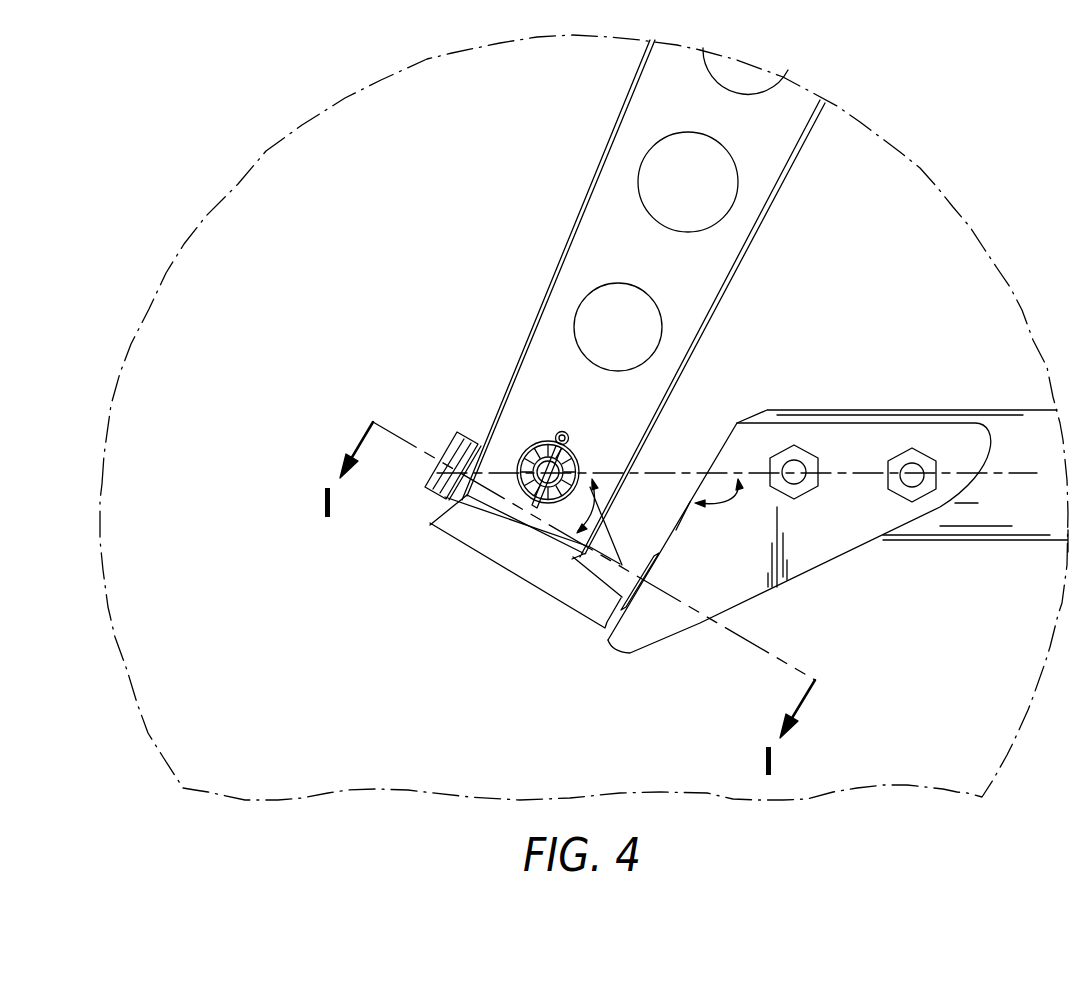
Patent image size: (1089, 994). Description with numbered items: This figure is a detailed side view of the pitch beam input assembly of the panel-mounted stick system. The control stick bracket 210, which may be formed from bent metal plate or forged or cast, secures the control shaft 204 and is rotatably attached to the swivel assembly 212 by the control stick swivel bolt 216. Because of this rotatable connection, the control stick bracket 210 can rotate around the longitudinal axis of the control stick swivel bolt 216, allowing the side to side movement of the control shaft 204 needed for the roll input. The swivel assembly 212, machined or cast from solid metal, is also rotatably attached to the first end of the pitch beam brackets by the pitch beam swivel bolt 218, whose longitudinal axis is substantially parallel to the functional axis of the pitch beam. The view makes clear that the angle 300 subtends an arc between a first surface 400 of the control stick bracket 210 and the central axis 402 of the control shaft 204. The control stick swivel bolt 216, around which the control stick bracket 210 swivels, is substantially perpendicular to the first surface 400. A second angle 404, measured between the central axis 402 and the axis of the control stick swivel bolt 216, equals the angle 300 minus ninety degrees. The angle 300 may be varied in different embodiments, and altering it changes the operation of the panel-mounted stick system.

The control shaft 204 is at (1003, 428).
The control stick bracket 210 is at (817, 553).
The swivel assembly 212 is at (507, 562).
The control stick swivel bolt 216 is at (452, 457).
The pitch beam swivel bolt 218 is at (548, 466).
The angle 300 is at (720, 507).
The first surface 400 is at (684, 525).
The central axis 402 is at (852, 470).
The angle 404 is at (577, 510).